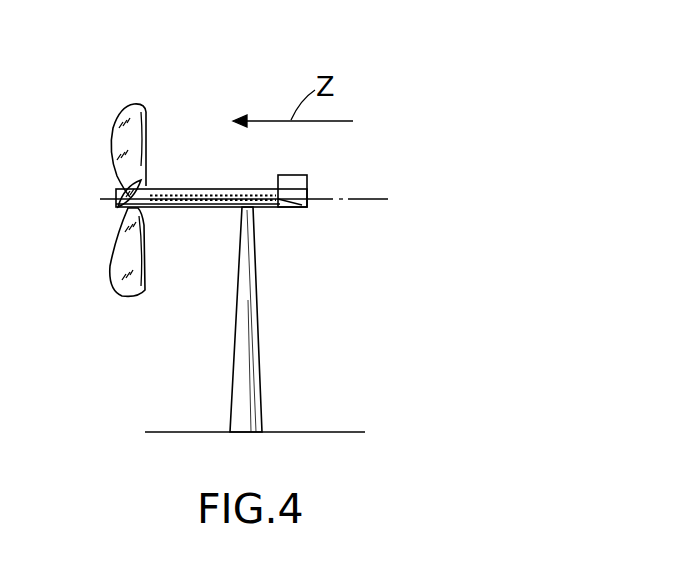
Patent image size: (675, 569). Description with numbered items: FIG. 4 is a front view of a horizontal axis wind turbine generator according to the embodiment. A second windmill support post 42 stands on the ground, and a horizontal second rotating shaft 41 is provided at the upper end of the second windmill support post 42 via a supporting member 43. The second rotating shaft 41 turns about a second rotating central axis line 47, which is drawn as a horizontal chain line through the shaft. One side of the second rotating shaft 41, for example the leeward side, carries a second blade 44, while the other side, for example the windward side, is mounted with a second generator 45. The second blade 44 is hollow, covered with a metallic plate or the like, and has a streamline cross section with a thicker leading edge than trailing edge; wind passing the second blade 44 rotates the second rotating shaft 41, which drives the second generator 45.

The second rotating shaft 41 is at (178, 197).
The second windmill support post 42 is at (255, 322).
The supporting member 43 is at (199, 190).
The second blade 44 is at (128, 108).
The second generator 45 is at (296, 186).
The second rotating central axis line 47 is at (357, 201).